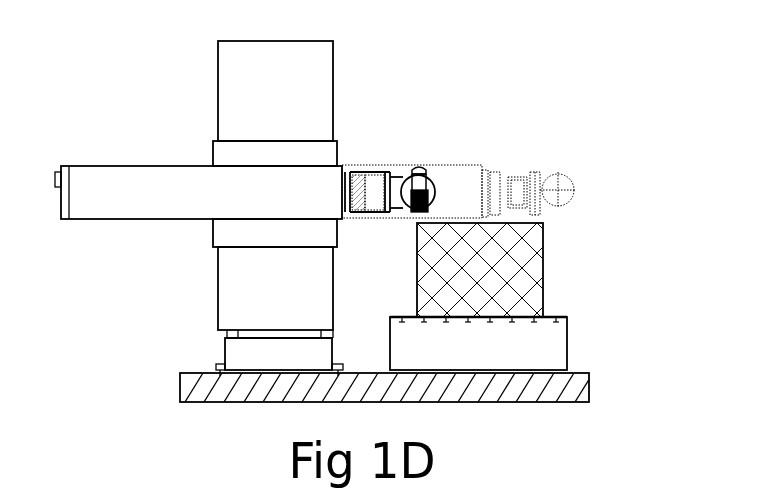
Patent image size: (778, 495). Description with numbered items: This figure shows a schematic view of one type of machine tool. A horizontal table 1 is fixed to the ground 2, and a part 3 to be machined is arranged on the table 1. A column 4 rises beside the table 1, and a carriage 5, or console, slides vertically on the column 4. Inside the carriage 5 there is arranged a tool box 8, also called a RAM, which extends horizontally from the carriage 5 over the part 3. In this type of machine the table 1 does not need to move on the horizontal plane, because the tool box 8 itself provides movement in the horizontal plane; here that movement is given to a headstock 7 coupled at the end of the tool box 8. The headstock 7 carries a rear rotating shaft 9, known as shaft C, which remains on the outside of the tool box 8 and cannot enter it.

The horizontal table 1 is at (558, 335).
The ground 2 is at (580, 388).
The part 3 is at (533, 272).
The column 4 is at (279, 80).
The carriage 5 is at (230, 157).
The headstock 7 is at (420, 190).
The tool box 8 is at (203, 195).
The rear rotating shaft 9 is at (373, 190).